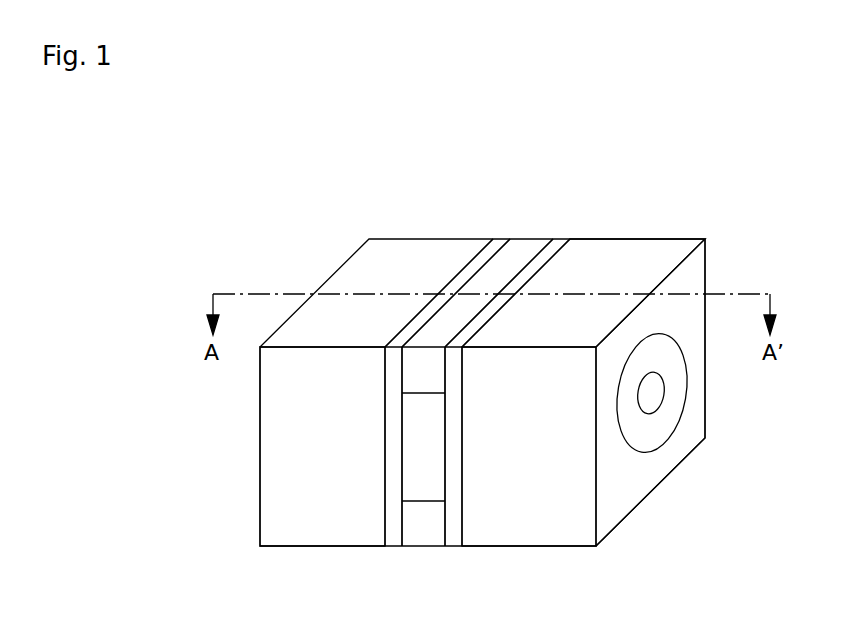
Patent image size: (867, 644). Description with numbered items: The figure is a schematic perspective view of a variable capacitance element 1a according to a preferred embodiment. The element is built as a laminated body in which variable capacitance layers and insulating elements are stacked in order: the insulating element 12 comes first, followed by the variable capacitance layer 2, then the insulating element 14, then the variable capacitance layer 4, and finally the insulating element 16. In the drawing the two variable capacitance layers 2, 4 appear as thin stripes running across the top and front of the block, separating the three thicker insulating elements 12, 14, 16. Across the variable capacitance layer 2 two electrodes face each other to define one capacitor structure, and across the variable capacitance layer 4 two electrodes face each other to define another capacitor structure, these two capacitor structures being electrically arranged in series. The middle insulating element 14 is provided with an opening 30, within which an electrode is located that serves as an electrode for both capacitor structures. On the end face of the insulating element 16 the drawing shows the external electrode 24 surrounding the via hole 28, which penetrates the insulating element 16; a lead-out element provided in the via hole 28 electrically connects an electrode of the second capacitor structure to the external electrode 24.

The variable capacitance element 1a is at (264, 240).
The insulating element 12 is at (405, 246).
The variable capacitance layer 2 is at (496, 246).
The variable capacitance layer 4 is at (556, 246).
The insulating element 14 is at (430, 533).
The insulating element 16 is at (658, 247).
The external electrode 24 is at (677, 386).
The via hole 28 is at (652, 403).
The opening 30 is at (418, 483).